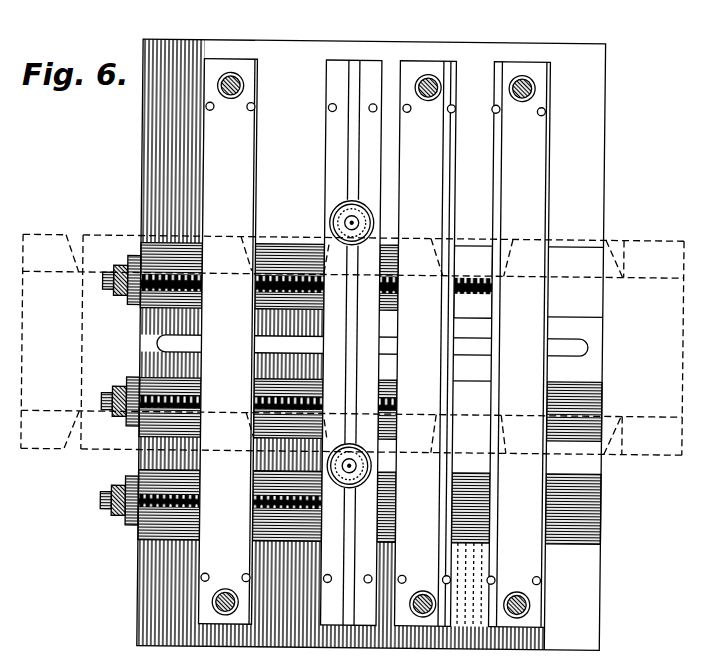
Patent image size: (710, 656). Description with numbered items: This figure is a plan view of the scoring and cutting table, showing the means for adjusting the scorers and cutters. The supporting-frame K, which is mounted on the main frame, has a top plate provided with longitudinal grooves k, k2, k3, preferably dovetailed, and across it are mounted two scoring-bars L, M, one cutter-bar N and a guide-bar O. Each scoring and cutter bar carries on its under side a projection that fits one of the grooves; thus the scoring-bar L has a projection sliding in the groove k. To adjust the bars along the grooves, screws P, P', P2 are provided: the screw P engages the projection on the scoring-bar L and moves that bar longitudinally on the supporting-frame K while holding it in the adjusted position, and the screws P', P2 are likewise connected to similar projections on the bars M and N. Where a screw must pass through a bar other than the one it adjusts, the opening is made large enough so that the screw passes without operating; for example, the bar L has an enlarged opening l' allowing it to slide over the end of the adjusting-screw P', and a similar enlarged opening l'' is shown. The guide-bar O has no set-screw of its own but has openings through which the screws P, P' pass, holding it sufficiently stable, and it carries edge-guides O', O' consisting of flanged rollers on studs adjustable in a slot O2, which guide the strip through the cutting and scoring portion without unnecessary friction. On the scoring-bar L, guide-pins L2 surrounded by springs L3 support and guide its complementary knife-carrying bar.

The supporting-frame K is at (612, 178).
The longitudinal groove k is at (141, 244).
The longitudinal groove k2 is at (602, 401).
The longitudinal groove k3 is at (594, 512).
The scoring-bar L is at (519, 345).
The guide-pins L2 is at (533, 88).
The springs L3 is at (524, 99).
The scoring-bar M is at (426, 344).
The cutter-bar N is at (228, 342).
The guide-bar O is at (338, 343).
The edge-guides O' is at (363, 222).
The slot O2 is at (352, 163).
The adjusting-screw P is at (297, 275).
The adjusting-screw P' is at (249, 400).
The adjusting-screw P2 is at (197, 500).
The enlarged opening l' is at (373, 327).
The slot l'' is at (187, 409).